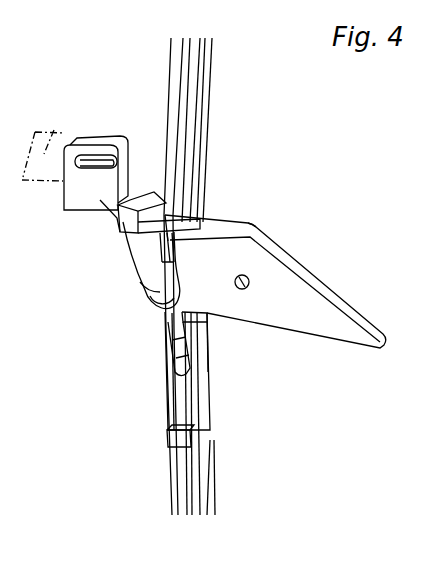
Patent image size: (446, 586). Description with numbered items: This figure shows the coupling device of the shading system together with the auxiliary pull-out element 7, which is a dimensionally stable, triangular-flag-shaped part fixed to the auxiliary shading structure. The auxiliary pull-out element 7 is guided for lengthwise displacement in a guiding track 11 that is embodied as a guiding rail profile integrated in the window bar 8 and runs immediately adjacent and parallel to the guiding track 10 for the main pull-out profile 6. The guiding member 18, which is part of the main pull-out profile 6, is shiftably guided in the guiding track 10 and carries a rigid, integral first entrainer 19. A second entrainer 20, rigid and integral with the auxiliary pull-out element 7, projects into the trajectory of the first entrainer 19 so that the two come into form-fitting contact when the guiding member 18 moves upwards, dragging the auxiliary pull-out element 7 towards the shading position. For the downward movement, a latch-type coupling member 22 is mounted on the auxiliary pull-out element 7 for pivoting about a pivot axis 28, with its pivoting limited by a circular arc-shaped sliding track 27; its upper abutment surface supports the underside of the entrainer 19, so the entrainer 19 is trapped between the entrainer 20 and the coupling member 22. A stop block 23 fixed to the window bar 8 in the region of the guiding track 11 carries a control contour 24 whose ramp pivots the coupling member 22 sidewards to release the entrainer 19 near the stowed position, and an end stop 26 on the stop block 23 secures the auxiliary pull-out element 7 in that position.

The main pull-out profile 6 is at (63, 128).
The auxiliary pull-out element 7 is at (275, 292).
The window bar 8 is at (195, 276).
The guiding track 10 is at (170, 128).
The guiding track 11 is at (200, 185).
The guiding member 18 is at (78, 183).
The first entrainer 19 is at (121, 212).
The second entrainer 20 is at (112, 214).
The coupling member 22 is at (155, 291).
The stop block 23 is at (195, 398).
The control contour 24 is at (168, 363).
The end stop 26 is at (167, 437).
The sliding track 27 is at (257, 231).
The pivot axis 28 is at (198, 282).